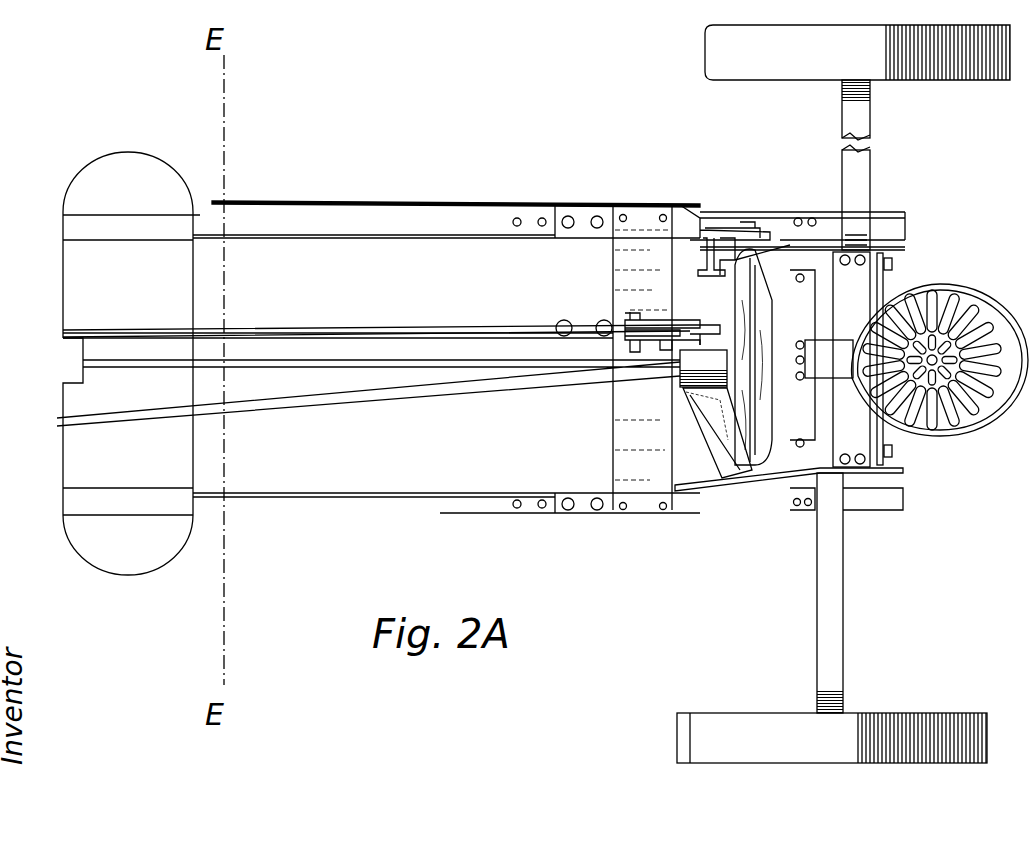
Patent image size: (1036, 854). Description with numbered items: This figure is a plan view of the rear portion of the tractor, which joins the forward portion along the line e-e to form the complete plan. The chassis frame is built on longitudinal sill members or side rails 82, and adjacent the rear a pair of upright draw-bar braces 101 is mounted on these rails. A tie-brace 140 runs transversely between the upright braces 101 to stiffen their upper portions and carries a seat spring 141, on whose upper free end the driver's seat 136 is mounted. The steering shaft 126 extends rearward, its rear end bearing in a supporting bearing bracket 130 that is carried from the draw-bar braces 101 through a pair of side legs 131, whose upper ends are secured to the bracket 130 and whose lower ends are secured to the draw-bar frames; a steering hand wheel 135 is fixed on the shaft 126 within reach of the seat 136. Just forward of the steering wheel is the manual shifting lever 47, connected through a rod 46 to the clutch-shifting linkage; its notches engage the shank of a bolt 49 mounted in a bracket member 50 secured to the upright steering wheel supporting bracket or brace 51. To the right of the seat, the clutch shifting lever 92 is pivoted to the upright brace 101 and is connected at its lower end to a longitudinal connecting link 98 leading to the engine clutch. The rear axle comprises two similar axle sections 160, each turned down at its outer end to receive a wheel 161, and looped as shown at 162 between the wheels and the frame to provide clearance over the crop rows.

The rod 46 is at (465, 333).
The manual shifting lever 47 is at (702, 322).
The bolt 49 is at (628, 316).
The bracket member 50 is at (645, 318).
The steering wheel supporting bracket 51 is at (712, 398).
The longitudinal sill member 82 is at (446, 218).
The clutch shifting lever 92 is at (770, 235).
The longitudinal connecting link 98 is at (373, 203).
The upright draw-bar brace 101 is at (773, 262).
The steering shaft 126 is at (378, 395).
The supporting bearing bracket 130 is at (690, 372).
The side leg 131 is at (710, 282).
The steering hand wheel 135 is at (760, 470).
The driver's seat 136 is at (962, 302).
The tie-brace 140 is at (862, 290).
The seat spring 141 is at (835, 372).
The axle section 160 is at (860, 200).
The wheel 161 is at (770, 73).
The loop 162 is at (873, 88).